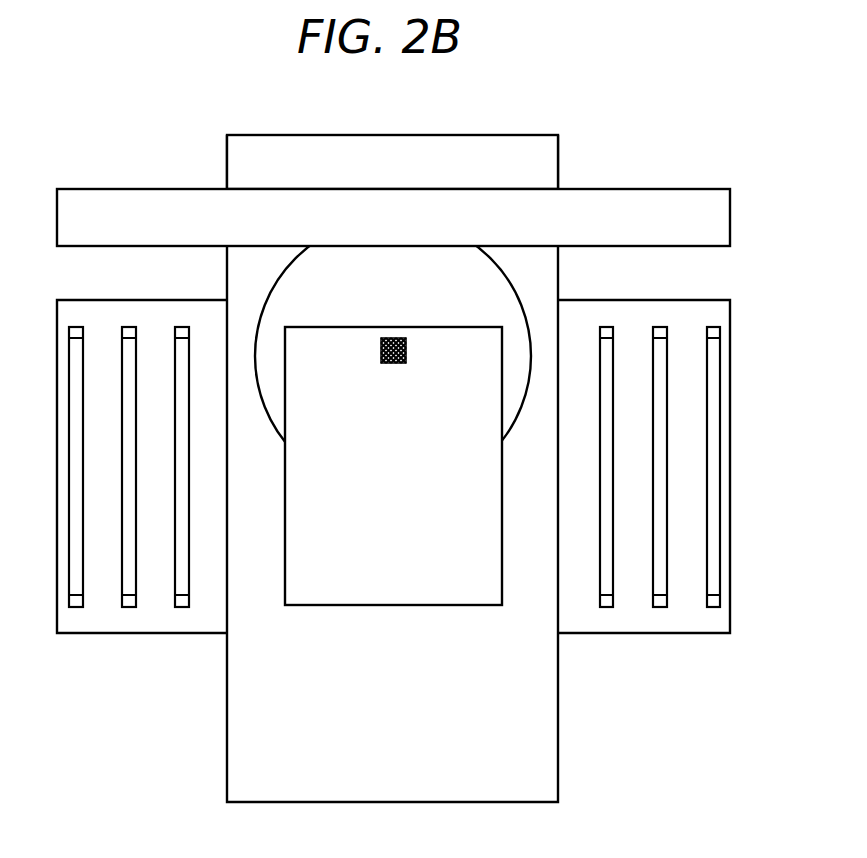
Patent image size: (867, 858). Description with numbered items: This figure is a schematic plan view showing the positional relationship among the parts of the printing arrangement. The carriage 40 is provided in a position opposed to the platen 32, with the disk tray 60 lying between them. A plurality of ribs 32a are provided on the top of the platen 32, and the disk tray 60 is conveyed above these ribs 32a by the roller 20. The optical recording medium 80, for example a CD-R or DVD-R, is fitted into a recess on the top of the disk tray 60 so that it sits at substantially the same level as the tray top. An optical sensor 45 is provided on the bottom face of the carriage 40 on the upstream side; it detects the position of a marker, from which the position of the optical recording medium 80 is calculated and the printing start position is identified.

The roller 20 is at (676, 189).
The platen 32 is at (679, 643).
The ribs 32a is at (132, 607).
The carriage 40 is at (505, 627).
The optical sensor 45 is at (408, 338).
The disk tray 60 is at (393, 135).
The optical recording medium 80 is at (273, 283).